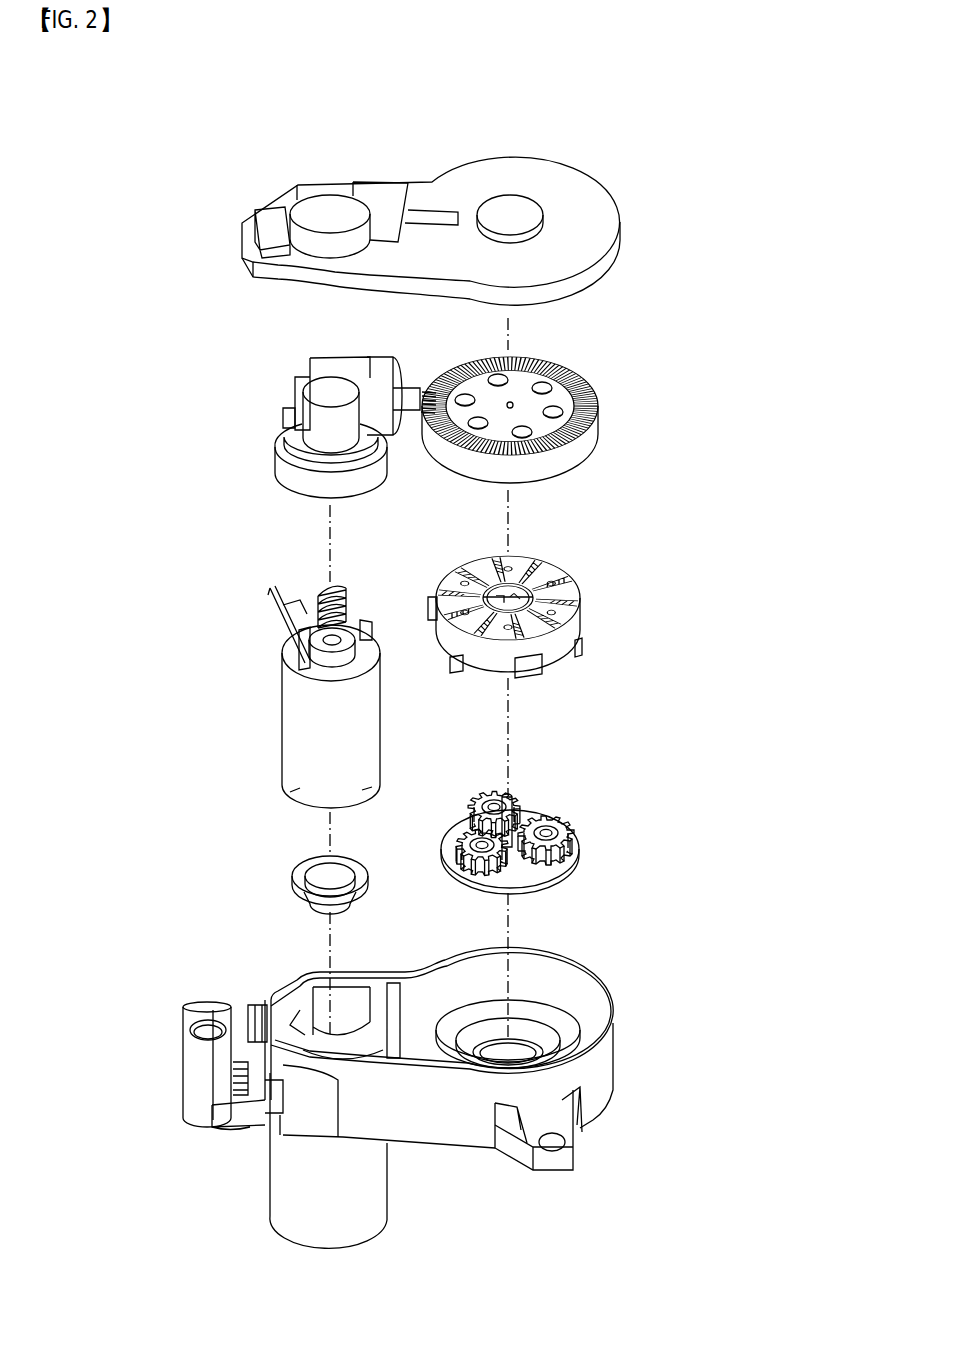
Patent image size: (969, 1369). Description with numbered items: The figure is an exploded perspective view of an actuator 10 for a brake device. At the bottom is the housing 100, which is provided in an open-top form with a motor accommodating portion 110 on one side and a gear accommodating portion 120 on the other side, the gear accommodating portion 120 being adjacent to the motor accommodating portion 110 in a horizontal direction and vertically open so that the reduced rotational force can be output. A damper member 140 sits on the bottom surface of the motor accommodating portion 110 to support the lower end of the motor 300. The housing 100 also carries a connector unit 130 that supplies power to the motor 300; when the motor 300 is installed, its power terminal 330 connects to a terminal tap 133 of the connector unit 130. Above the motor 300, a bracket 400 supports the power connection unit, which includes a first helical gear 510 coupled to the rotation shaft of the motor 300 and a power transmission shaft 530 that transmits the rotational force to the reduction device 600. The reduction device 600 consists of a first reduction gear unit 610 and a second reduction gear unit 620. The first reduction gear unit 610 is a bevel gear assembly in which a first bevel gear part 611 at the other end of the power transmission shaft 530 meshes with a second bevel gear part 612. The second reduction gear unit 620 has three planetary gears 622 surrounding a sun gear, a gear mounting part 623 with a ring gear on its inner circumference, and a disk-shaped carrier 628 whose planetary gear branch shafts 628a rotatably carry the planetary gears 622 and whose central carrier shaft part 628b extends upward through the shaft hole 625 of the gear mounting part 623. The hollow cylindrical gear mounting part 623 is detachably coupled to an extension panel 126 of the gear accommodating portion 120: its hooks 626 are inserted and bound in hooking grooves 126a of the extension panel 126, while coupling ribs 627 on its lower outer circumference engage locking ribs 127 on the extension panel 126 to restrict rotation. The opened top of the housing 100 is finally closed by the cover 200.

The actuator 10 is at (166, 250).
The housing 100 is at (408, 1105).
The motor accommodating portion 110 is at (300, 1010).
The gear accommodating portion 120 is at (602, 988).
The extension panel 126 is at (566, 1020).
The hooking grooves 126a is at (560, 1062).
The locking ribs 127 is at (578, 1006).
The connector unit 130 is at (186, 1095).
The terminal tap 133 is at (258, 1004).
The damper member 140 is at (298, 875).
The cover 200 is at (618, 174).
The motor 300 is at (299, 679).
The power terminal 330 is at (283, 614).
The bracket 400 is at (308, 422).
The first helical gear 510 is at (320, 592).
The power transmission shaft 530 is at (410, 388).
The reduction device 600 is at (690, 476).
The first reduction gear unit 610 is at (540, 431).
The first bevel gear part 611 is at (416, 414).
The second bevel gear part 612 is at (599, 430).
The second reduction gear unit 620 is at (556, 725).
The planetary gears 622 is at (514, 808).
The gear mounting part 623 is at (540, 639).
The shaft hole 625 is at (584, 605).
The hooks 626 is at (584, 652).
The coupling ribs 627 is at (533, 675).
The carrier 628 is at (544, 842).
The planetary gear branch shafts 628a is at (572, 838).
The carrier shaft part 628b is at (553, 822).